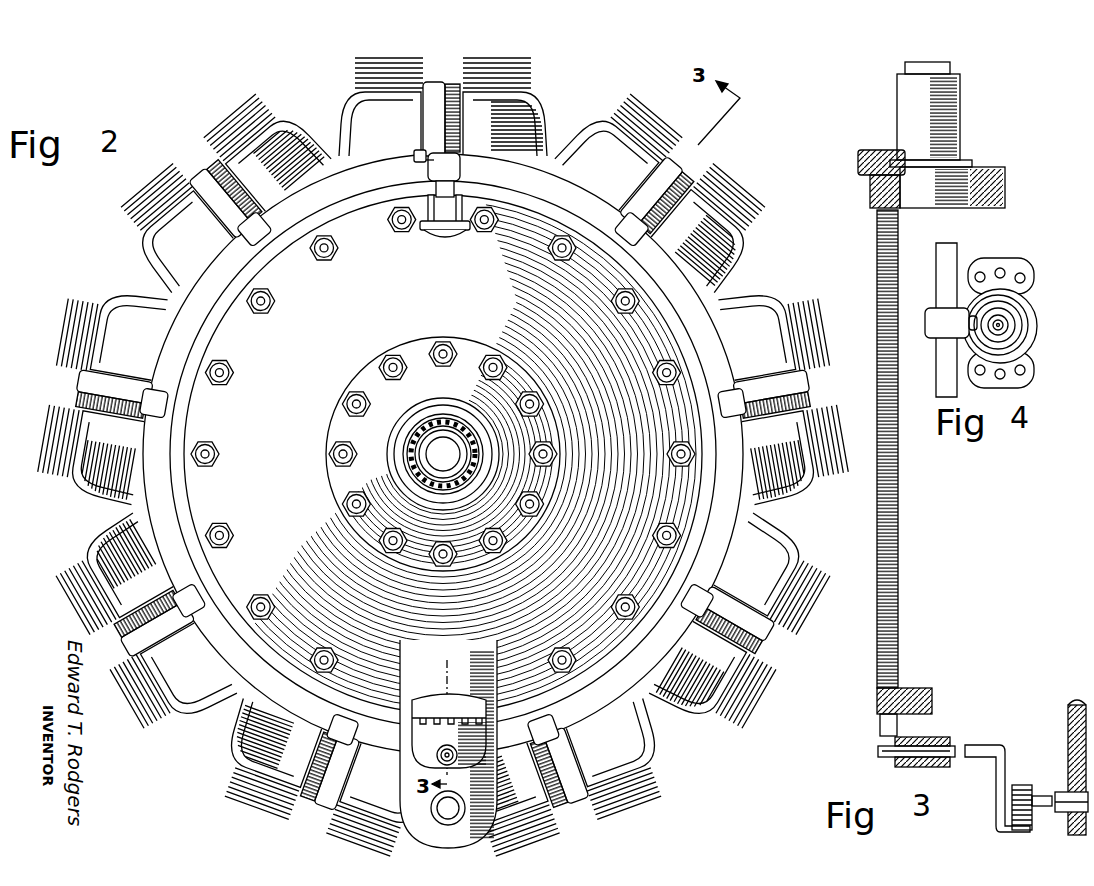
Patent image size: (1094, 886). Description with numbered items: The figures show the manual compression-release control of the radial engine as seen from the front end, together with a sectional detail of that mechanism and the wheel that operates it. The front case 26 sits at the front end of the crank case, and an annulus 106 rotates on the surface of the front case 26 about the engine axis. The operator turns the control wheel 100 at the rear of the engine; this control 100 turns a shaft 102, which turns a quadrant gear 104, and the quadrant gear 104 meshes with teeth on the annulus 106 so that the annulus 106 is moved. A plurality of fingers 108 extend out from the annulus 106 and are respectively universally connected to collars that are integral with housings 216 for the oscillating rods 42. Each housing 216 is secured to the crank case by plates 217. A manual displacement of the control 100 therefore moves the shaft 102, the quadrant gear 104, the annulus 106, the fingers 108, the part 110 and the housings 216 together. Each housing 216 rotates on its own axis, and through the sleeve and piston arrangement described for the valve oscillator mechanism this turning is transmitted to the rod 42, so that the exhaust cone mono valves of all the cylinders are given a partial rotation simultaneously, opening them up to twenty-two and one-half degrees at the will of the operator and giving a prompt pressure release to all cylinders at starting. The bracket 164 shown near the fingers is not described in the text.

In FIG. 2, the front case 26 is at (236, 325).
In FIG. 3, the front case 26 is at (918, 690).
In FIG. 4, the oscillating rod 42 is at (994, 330).
In FIG. 3, the control wheel 100 is at (1072, 706).
In FIG. 3, the shaft 102 is at (1060, 796).
In FIG. 3, the quadrant gear 104 is at (1003, 798).
In FIG. 2, the annulus 106 is at (700, 508).
In FIG. 3, the annulus 106 is at (897, 590).
In FIG. 4, the annulus 106 is at (950, 255).
In FIG. 2, the finger 108 is at (454, 181).
In FIG. 3, the finger 108 is at (868, 182).
In FIG. 2, the part moved by the control 110 is at (428, 176).
In FIG. 3, the part moved by the control 110 is at (866, 150).
In FIG. 4, the part moved by the control 110 is at (936, 324).
In FIG. 2, the bracket 164 is at (432, 222).
In FIG. 2, the housing 216 is at (642, 176).
In FIG. 3, the housing 216 is at (958, 100).
In FIG. 4, the housing 216 is at (985, 311).
In FIG. 2, the plate 217 is at (416, 156).
In FIG. 4, the plate 217 is at (1028, 268).